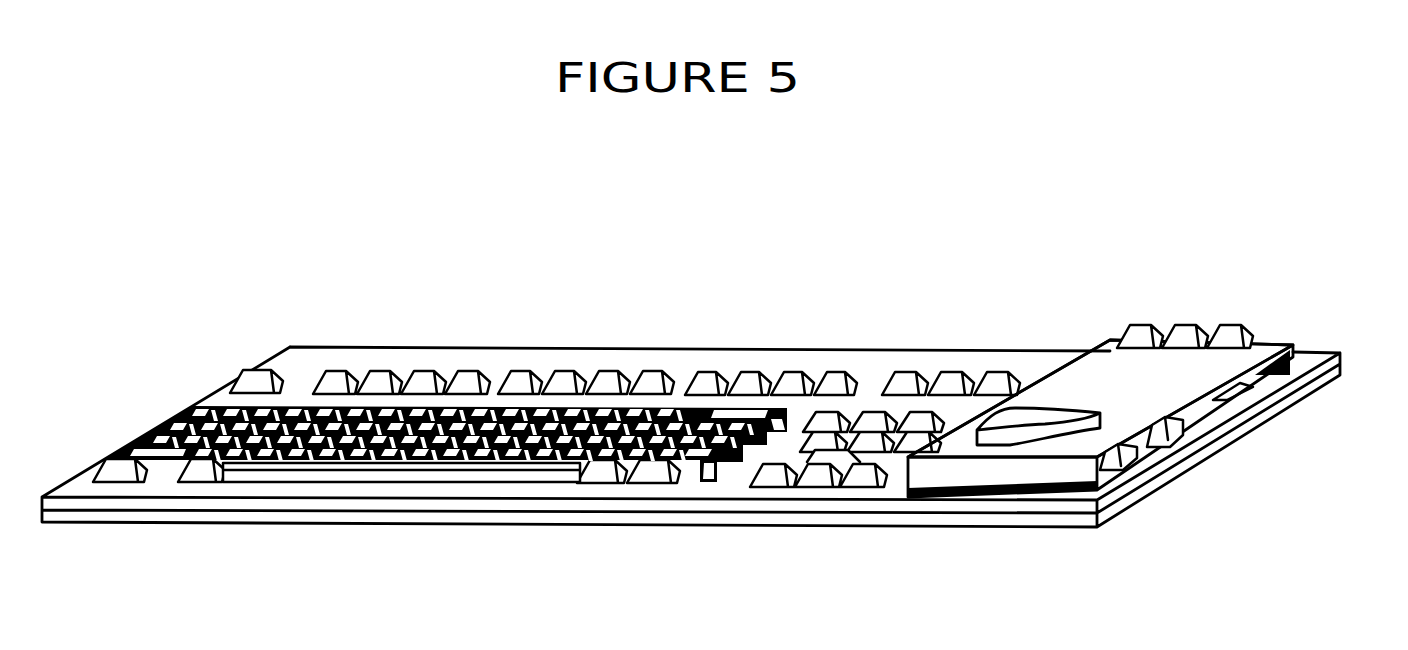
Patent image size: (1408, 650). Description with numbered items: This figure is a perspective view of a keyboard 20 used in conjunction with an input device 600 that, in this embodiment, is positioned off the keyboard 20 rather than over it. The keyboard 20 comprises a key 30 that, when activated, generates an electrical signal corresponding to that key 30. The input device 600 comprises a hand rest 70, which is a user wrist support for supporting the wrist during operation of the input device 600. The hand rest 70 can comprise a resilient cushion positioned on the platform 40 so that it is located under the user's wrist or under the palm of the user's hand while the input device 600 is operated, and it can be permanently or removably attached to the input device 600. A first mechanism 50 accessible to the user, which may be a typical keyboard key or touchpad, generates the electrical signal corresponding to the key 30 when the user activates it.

The keyboard 20 is at (440, 355).
The key 30 is at (1143, 447).
The platform 40 is at (1108, 372).
The first mechanism 50 is at (1250, 332).
The hand rest 70 is at (1007, 438).
The input device 600 is at (1102, 338).